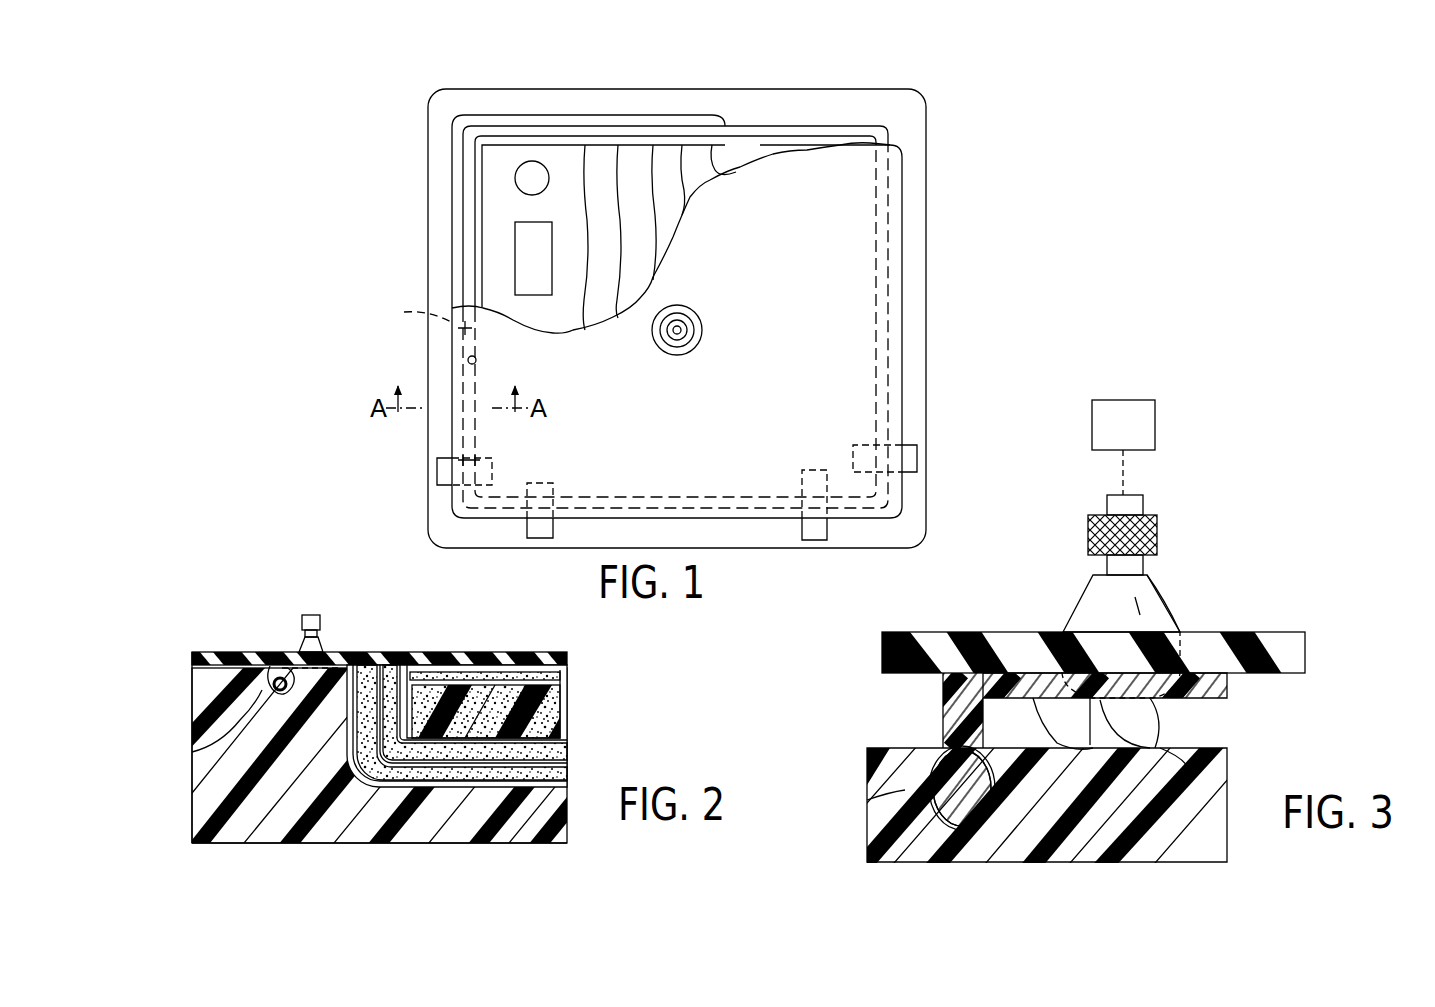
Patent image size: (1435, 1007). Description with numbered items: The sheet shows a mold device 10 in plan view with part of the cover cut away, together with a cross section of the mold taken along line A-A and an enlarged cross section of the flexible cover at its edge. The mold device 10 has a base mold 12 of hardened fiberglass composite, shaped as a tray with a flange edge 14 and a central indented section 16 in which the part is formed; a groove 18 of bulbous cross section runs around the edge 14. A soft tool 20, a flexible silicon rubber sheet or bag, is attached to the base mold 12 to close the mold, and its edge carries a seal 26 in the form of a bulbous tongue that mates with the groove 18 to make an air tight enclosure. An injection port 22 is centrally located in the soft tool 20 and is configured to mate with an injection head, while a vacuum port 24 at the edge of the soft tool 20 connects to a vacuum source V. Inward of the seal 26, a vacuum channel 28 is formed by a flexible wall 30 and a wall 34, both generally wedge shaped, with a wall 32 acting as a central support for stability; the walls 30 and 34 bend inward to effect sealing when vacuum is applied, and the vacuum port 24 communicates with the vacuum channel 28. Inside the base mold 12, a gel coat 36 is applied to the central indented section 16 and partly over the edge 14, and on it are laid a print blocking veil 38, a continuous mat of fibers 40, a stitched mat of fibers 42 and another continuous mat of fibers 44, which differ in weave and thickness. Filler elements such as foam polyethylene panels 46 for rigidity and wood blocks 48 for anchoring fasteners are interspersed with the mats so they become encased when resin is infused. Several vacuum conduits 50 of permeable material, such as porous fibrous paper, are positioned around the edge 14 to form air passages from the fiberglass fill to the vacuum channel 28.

In FIG. 1, the mold device 10 is at (978, 120).
In FIG. 1, the base mold 12 is at (430, 118).
In FIG. 2, the base mold 12 is at (190, 716).
In FIG. 2, the flange edge 14 is at (203, 652).
In FIG. 3, the flange edge 14 is at (867, 752).
In FIG. 2, the central indented section 16 is at (490, 795).
In FIG. 1, the groove 18 is at (452, 143).
In FIG. 2, the groove 18 is at (222, 740).
In FIG. 3, the groove 18 is at (905, 790).
In FIG. 1, the soft tool 20 is at (855, 297).
In FIG. 2, the soft tool 20 is at (245, 650).
In FIG. 3, the soft tool 20 is at (1233, 632).
In FIG. 1, the injection port 22 is at (696, 311).
In FIG. 1, the vacuum port 24 is at (468, 362).
In FIG. 2, the vacuum port 24 is at (300, 652).
In FIG. 3, the vacuum port 24 is at (1178, 553).
In FIG. 2, the seal 26 is at (270, 680).
In FIG. 3, the seal 26 is at (943, 740).
In FIG. 1, the vacuum channel 28 is at (422, 315).
In FIG. 2, the vacuum channel 28 is at (330, 668).
In FIG. 3, the vacuum channel 28 is at (1160, 742).
In FIG. 3, the flexible wall 30 is at (1153, 725).
In FIG. 3, the wall 32 is at (1175, 790).
In FIG. 3, the wall 34 is at (1033, 698).
In FIG. 1, the gel coat 36 is at (728, 158).
In FIG. 1, the print blocking veil 38 is at (702, 157).
In FIG. 2, the print blocking veil 38 is at (365, 668).
In FIG. 1, the continuous mat of fibers 40 is at (667, 157).
In FIG. 2, the continuous mat of fibers 40 is at (395, 668).
In FIG. 1, the stitched mat of fibers 42 is at (635, 157).
In FIG. 1, the continuous mat of fibers 44 is at (597, 157).
In FIG. 2, the continuous mat of fibers 44 is at (490, 672).
In FIG. 1, the foam polyethylene panel 46 is at (490, 162).
In FIG. 2, the foam polyethylene panel 46 is at (560, 710).
In FIG. 1, the wood block 48 is at (530, 246).
In FIG. 1, the vacuum conduit 50 is at (440, 470).